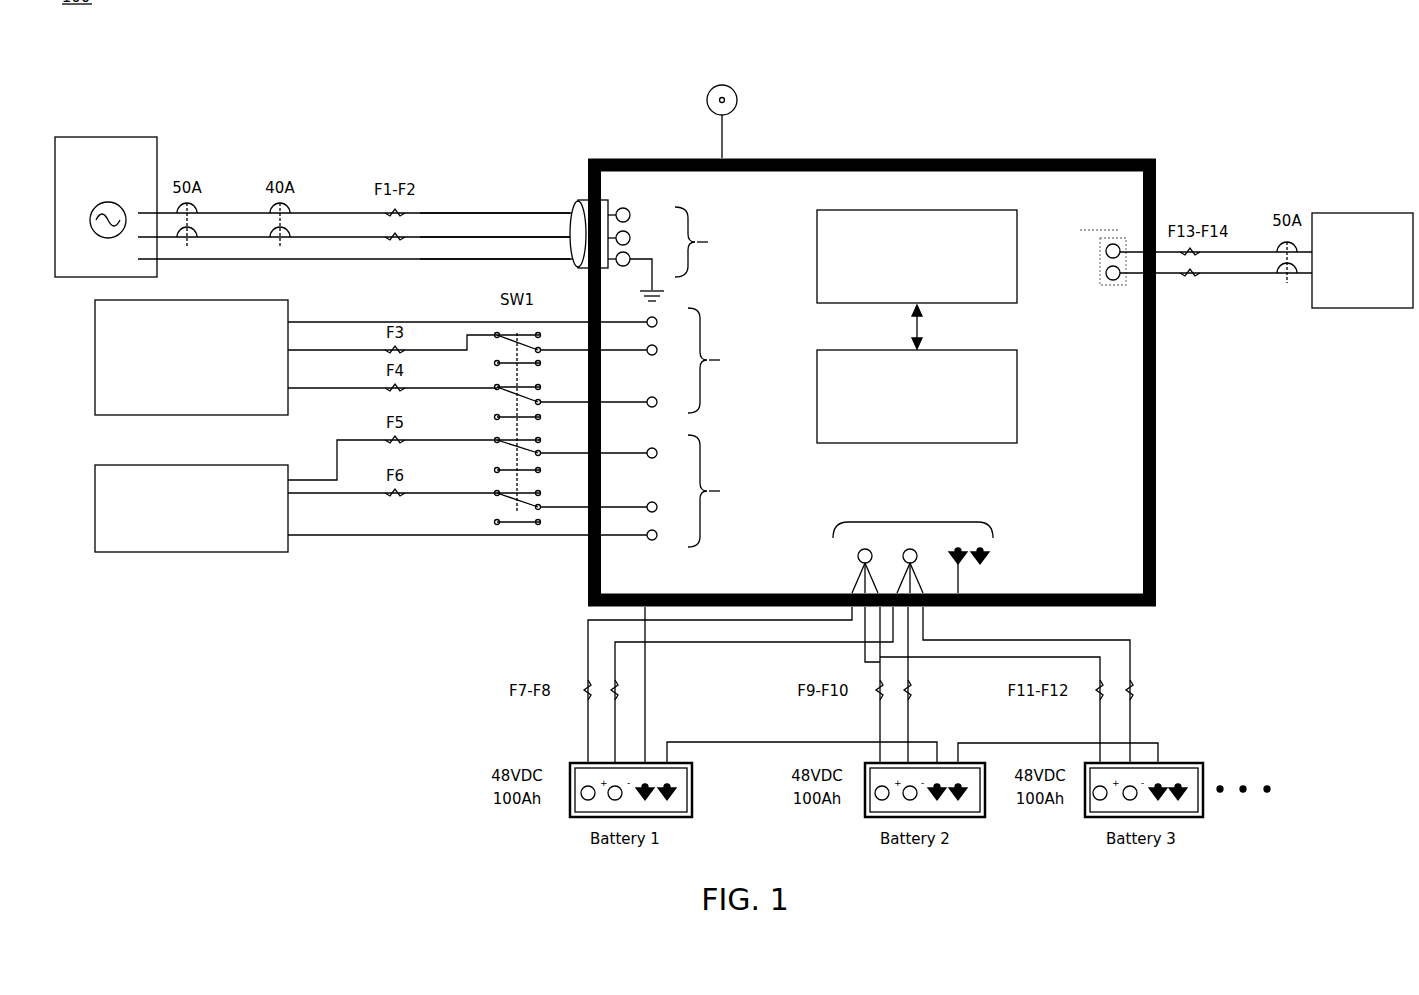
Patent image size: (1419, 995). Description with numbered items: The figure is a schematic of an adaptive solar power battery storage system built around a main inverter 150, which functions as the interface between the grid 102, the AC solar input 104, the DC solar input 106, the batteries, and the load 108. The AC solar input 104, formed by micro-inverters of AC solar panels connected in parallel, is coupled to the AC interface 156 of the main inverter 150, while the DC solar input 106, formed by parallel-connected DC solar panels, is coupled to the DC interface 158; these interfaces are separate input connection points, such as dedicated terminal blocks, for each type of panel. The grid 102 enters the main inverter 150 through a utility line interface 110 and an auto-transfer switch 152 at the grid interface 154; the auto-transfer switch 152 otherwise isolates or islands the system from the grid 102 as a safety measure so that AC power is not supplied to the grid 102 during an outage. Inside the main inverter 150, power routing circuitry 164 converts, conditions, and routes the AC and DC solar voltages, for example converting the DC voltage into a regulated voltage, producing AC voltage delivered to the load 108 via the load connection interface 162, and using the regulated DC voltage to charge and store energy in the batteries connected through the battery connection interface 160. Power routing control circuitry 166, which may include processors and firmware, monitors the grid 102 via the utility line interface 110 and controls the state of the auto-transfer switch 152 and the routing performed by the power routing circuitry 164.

The grid 102 is at (80, 137).
The AC solar input 104 is at (208, 415).
The DC solar input 106 is at (210, 552).
The load 108 is at (1380, 308).
The utility line interface 110 is at (572, 235).
The main inverter 150 is at (962, 158).
The auto-transfer switch 152 is at (590, 200).
The grid interface 154 is at (692, 254).
The AC interface 156 is at (721, 360).
The DC interface 158 is at (721, 491).
The battery connection interface 160 is at (913, 521).
The load connection interface 162 is at (1097, 262).
The power routing circuitry 164 is at (917, 256).
The power routing control circuitry 166 is at (917, 396).